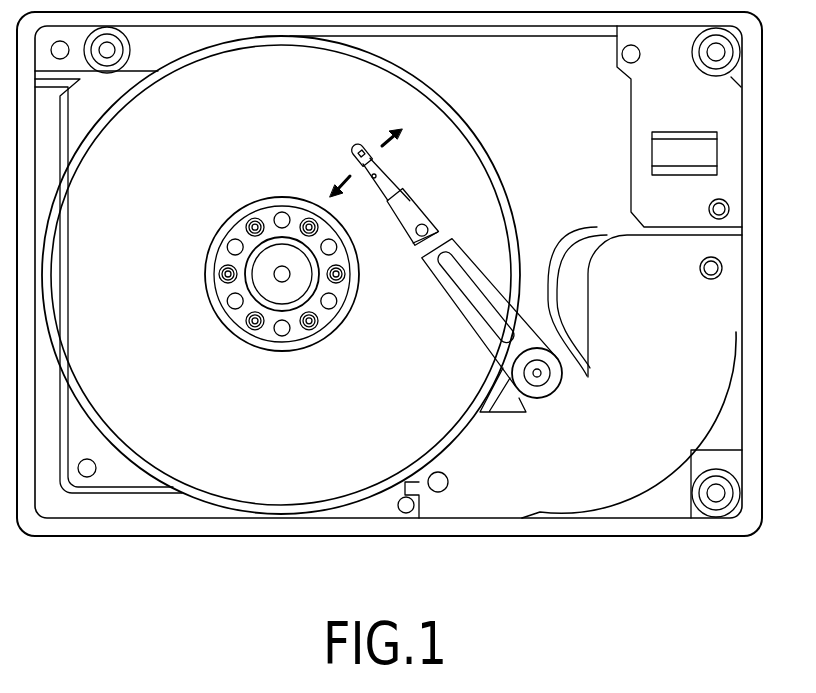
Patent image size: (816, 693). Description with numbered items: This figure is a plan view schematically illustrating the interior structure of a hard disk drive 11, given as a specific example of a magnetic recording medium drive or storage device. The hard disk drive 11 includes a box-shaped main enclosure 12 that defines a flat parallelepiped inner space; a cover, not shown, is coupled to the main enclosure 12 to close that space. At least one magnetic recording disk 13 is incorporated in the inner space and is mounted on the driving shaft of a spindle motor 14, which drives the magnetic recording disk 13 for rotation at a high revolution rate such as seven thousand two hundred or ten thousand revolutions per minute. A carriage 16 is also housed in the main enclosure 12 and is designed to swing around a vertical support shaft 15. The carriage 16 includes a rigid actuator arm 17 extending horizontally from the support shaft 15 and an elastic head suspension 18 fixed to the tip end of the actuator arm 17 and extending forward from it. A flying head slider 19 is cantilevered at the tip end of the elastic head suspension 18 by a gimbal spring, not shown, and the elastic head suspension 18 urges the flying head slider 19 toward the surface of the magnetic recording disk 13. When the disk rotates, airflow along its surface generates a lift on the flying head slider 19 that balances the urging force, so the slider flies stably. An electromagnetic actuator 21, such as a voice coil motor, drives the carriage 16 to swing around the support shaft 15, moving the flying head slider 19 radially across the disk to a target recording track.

The hard disk drive 11 is at (80, 560).
The main enclosure 12 is at (280, 535).
The magnetic recording disk 13 is at (498, 188).
The spindle motor 14 is at (222, 273).
The support shaft 15 is at (550, 376).
The carriage 16 is at (421, 254).
The actuator arm 17 is at (468, 326).
The elastic head suspension 18 is at (390, 188).
The flying head slider 19 is at (353, 156).
The electromagnetic actuator 21 is at (664, 522).